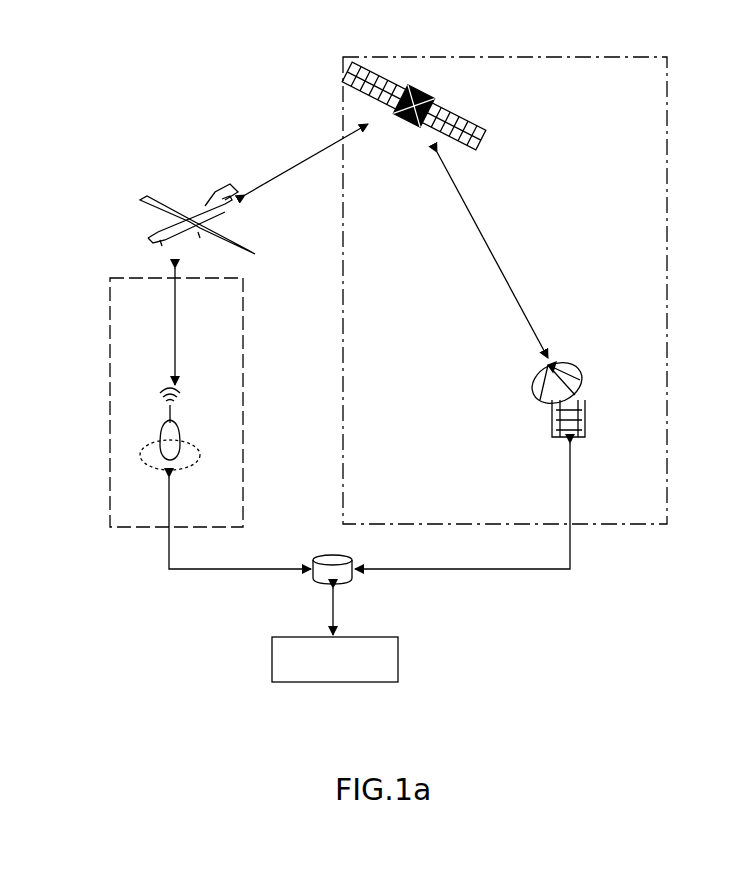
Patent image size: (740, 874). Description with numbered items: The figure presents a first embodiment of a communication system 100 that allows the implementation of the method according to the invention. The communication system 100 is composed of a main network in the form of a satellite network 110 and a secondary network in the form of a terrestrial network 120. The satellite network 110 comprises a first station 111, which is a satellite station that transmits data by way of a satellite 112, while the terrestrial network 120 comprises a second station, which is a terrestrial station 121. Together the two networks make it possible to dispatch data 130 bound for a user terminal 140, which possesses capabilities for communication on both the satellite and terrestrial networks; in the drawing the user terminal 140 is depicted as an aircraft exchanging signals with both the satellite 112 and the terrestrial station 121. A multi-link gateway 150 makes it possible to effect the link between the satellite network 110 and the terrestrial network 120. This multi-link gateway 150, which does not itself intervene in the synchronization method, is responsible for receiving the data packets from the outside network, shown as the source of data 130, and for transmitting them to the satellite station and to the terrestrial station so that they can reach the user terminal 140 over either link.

The communication system 100 is at (90, 80).
The satellite network 110 is at (572, 56).
The first station 111 is at (586, 387).
The satellite 112 is at (462, 108).
The terrestrial network 120 is at (110, 337).
The terrestrial station 121 is at (143, 460).
The data 130 is at (398, 662).
The user terminal 140 is at (150, 236).
The multi-link gateway 150 is at (350, 588).